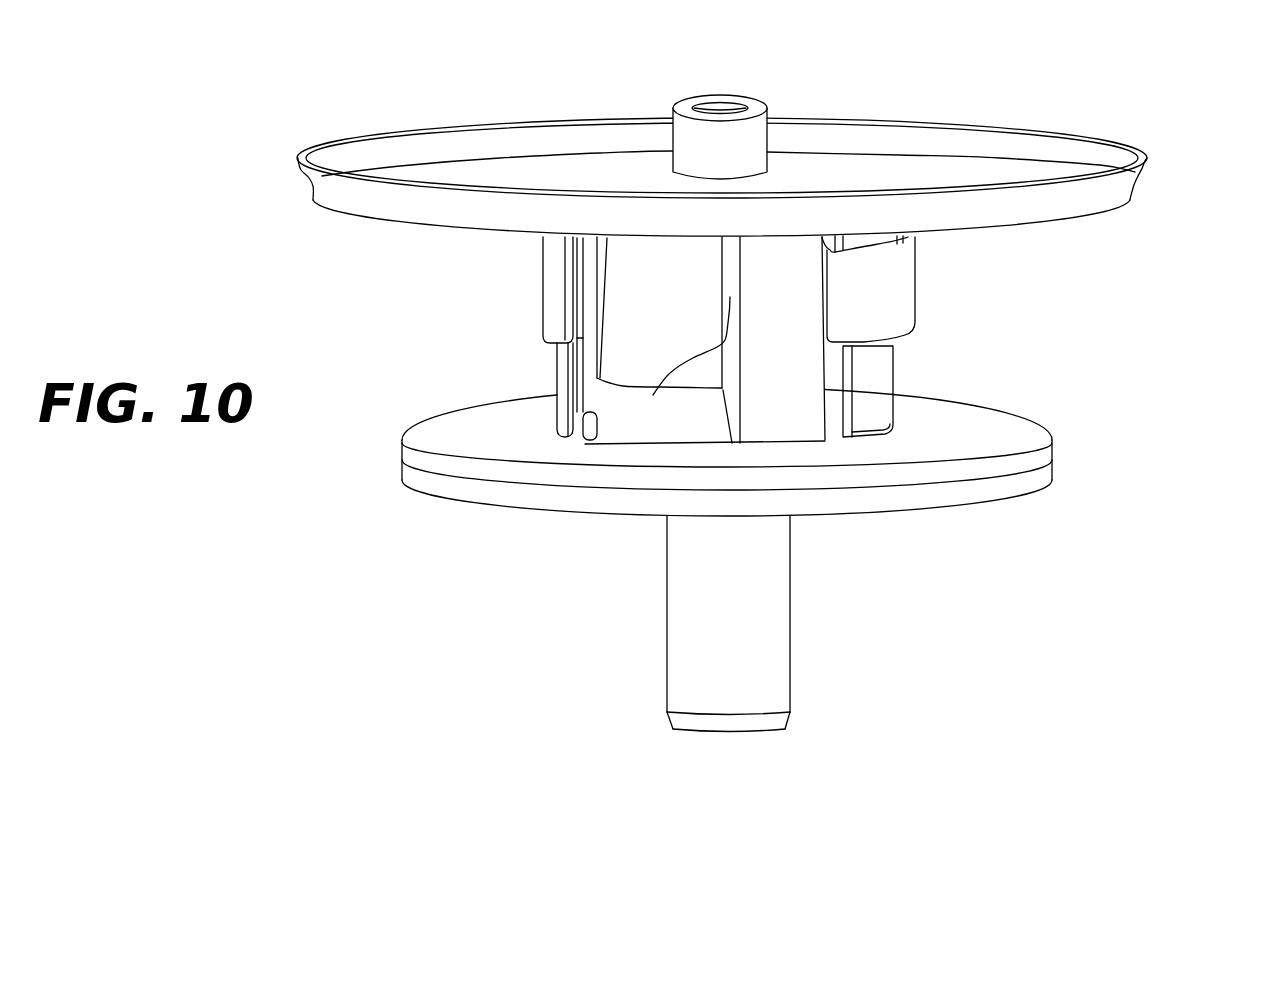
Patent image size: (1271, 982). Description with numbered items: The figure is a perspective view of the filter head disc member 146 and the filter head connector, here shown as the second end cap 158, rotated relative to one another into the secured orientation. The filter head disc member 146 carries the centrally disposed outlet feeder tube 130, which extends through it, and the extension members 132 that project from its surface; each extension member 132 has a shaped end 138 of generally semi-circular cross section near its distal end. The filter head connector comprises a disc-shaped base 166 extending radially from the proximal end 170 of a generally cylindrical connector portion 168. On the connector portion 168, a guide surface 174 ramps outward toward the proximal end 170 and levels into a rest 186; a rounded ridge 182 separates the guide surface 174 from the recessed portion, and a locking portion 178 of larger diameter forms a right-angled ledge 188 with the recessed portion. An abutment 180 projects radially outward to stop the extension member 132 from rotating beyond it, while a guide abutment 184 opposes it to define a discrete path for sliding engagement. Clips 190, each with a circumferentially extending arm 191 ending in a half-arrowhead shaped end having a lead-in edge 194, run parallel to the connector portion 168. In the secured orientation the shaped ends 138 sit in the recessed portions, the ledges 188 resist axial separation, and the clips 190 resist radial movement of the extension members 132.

The outlet feeder tube 130 is at (725, 682).
The extension member 132 is at (563, 367).
The shaped end 138 is at (577, 413).
The filter head disc member 146 is at (448, 142).
The second end cap 158 is at (1093, 521).
The base 166 is at (443, 432).
The connector portion 168 is at (787, 447).
The proximal end 170 is at (910, 418).
The guide surface 174 is at (686, 290).
The locking portion 178 is at (587, 245).
The abutment 180 is at (833, 330).
The rounded ridge 182 is at (596, 427).
The guide abutment 184 is at (682, 361).
The rest 186 is at (613, 425).
The ledge 188 is at (560, 397).
The clip 190 is at (552, 293).
The arm 191 is at (868, 262).
The lead-in edge 194 is at (567, 252).